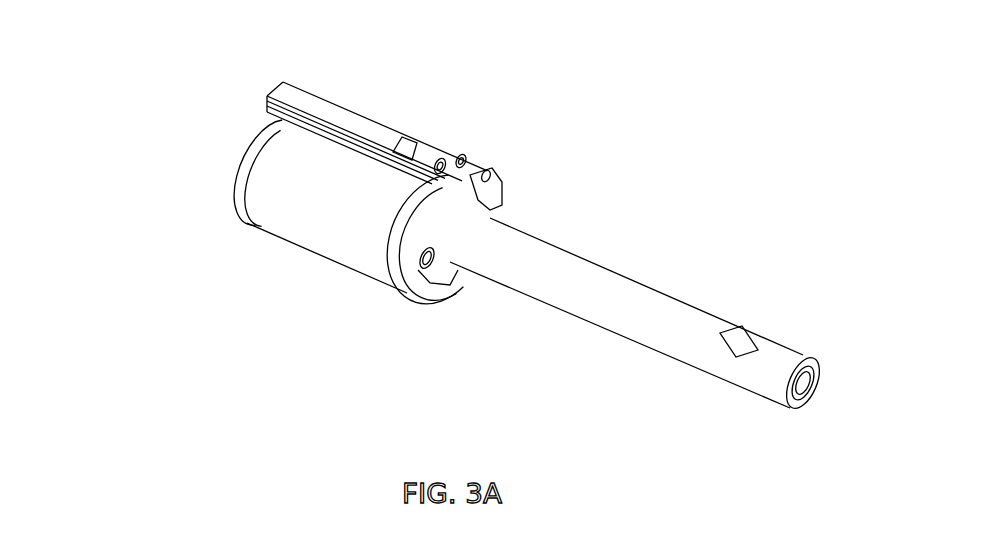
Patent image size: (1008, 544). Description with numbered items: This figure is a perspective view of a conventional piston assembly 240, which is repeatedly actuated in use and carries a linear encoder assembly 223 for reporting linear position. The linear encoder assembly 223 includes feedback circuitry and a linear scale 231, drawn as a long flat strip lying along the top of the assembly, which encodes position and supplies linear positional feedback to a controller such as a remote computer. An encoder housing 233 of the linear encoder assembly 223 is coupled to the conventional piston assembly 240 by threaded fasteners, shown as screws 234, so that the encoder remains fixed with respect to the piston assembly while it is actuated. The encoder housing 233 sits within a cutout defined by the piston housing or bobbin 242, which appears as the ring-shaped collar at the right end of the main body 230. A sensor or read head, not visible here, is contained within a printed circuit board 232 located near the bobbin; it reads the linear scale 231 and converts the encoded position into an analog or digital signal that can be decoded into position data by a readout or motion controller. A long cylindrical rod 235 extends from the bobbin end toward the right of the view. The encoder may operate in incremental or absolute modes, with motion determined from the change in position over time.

The conventional piston assembly 240 is at (446, 221).
The linear encoder assembly 223 is at (441, 218).
The housing 230 is at (293, 222).
The linear scale 231 is at (335, 107).
The printed circuit board 232 is at (482, 183).
The encoder housing 233 is at (428, 147).
The screws 234 is at (467, 156).
The tube 235 is at (616, 295).
The piston housing or bobbin 242 is at (400, 280).